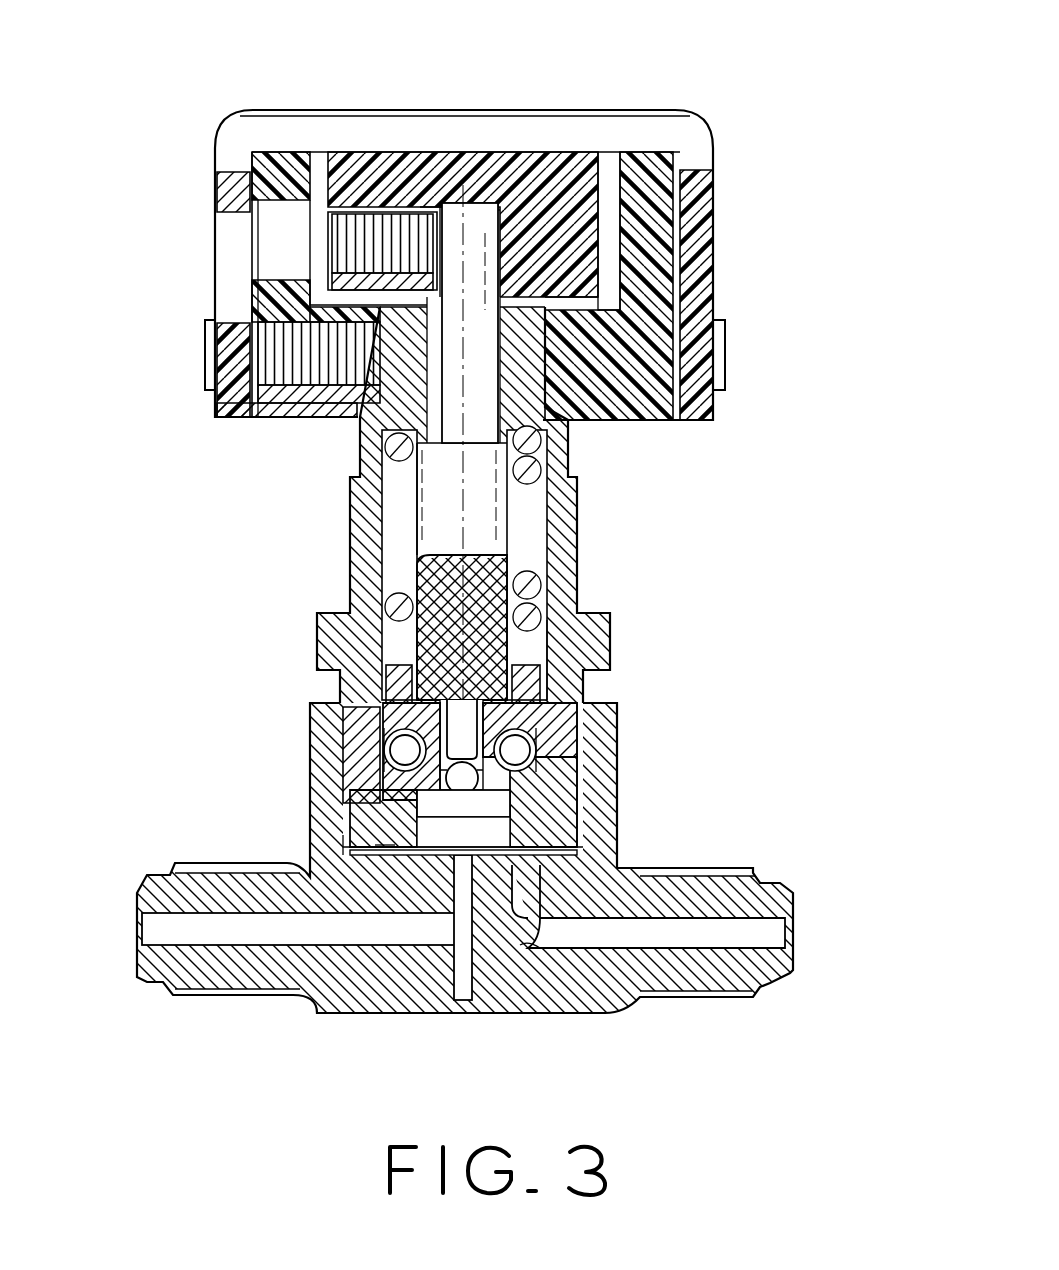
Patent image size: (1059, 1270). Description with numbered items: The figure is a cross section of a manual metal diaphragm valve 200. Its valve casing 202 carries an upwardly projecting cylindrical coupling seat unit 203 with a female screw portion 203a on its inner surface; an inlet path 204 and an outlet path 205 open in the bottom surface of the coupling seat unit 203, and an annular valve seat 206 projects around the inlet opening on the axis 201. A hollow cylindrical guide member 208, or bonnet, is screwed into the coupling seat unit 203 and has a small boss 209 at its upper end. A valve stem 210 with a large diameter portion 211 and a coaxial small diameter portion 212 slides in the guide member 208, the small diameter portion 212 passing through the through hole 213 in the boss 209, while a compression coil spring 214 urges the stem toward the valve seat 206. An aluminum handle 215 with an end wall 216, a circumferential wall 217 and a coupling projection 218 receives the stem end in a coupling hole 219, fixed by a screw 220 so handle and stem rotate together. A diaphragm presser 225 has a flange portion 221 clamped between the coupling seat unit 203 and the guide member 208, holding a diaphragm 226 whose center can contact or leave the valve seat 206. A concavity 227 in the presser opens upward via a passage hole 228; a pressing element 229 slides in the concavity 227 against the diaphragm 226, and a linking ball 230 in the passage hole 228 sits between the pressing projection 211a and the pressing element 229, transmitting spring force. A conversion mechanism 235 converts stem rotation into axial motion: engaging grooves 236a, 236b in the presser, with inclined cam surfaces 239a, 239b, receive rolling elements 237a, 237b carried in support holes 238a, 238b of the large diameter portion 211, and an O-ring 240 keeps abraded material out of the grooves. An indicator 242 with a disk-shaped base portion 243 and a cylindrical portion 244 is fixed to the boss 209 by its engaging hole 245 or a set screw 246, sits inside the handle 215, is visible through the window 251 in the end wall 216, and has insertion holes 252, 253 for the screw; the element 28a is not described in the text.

The metal diaphragm valve 200 is at (668, 96).
The axis 201 is at (462, 507).
The valve casing 202 is at (515, 990).
The coupling seat unit 203 is at (545, 845).
The female screw portion 203a is at (575, 742).
The inlet path 204 is at (217, 933).
The outlet path 205 is at (735, 938).
The valve seat 206 is at (462, 800).
The guide member 208 is at (565, 542).
The boss 209 is at (545, 380).
The valve stem 210 is at (321, 616).
The large diameter portion 211 is at (385, 640).
The pressing projection 211a is at (420, 682).
The small diameter portion 212 is at (435, 533).
The through hole 213 is at (435, 400).
The compression coil spring 214 is at (485, 720).
The handle 215 is at (718, 204).
The end wall 216 is at (450, 150).
The circumferential wall 217 is at (235, 348).
The coupling projection 218 is at (585, 165).
The coupling hole 219 is at (500, 215).
The screw 220 is at (380, 214).
The flange portion 221 is at (565, 860).
The diaphragm presser 225 is at (350, 835).
The diaphragm 226 is at (530, 935).
The concavity 227 is at (390, 850).
The passage hole 228 is at (520, 690).
The pressing element 229 is at (440, 822).
The linking ball 230 is at (525, 895).
The conversion mechanism 235 is at (560, 810).
The engaging groove 236a is at (395, 745).
The engaging groove 236b is at (540, 750).
The rolling element 237a is at (415, 712).
The rolling element 237b is at (505, 720).
The support hole 238a is at (405, 748).
The support hole 238b is at (522, 745).
The cam surface 239a is at (440, 790).
The cam surface 239b is at (555, 775).
The O-ring 240 is at (540, 700).
The indicator 242 is at (670, 266).
The base portion 243 is at (650, 376).
The cylindrical portion 244 is at (262, 300).
The engaging hole 245 is at (530, 362).
The set screw 246 is at (290, 378).
The window 251 is at (705, 126).
The insertion hole 252 is at (270, 212).
The insertion hole 253 is at (262, 275).
The seat gasket 28a is at (375, 855).